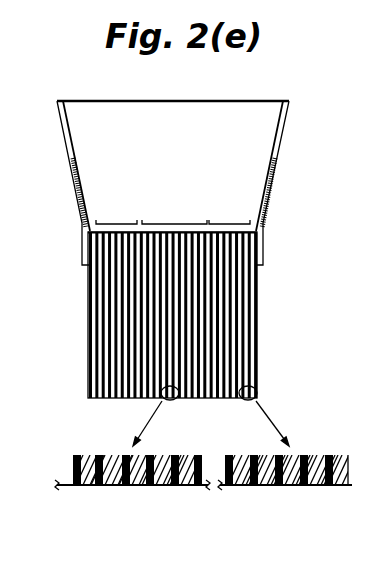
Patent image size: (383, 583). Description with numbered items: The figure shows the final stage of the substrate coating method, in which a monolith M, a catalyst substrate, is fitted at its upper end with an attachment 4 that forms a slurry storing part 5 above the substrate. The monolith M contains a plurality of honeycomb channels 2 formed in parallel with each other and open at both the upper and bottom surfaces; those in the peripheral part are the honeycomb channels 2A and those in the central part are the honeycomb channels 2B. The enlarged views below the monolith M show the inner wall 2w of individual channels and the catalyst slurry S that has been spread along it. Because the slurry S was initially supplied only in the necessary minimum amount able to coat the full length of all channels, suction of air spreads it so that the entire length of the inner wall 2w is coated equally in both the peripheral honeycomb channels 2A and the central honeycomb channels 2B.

The slurry storing part 5 is at (122, 146).
The attachment 4 is at (77, 203).
The honeycomb channels 2 is at (228, 325).
The monolith M is at (88, 368).
The honeycomb channels for the peripheral part 2A is at (317, 518).
The honeycomb channels for the central part 2B is at (115, 520).
The inner wall 2w is at (119, 456).
The catalyst slurry S is at (102, 484).